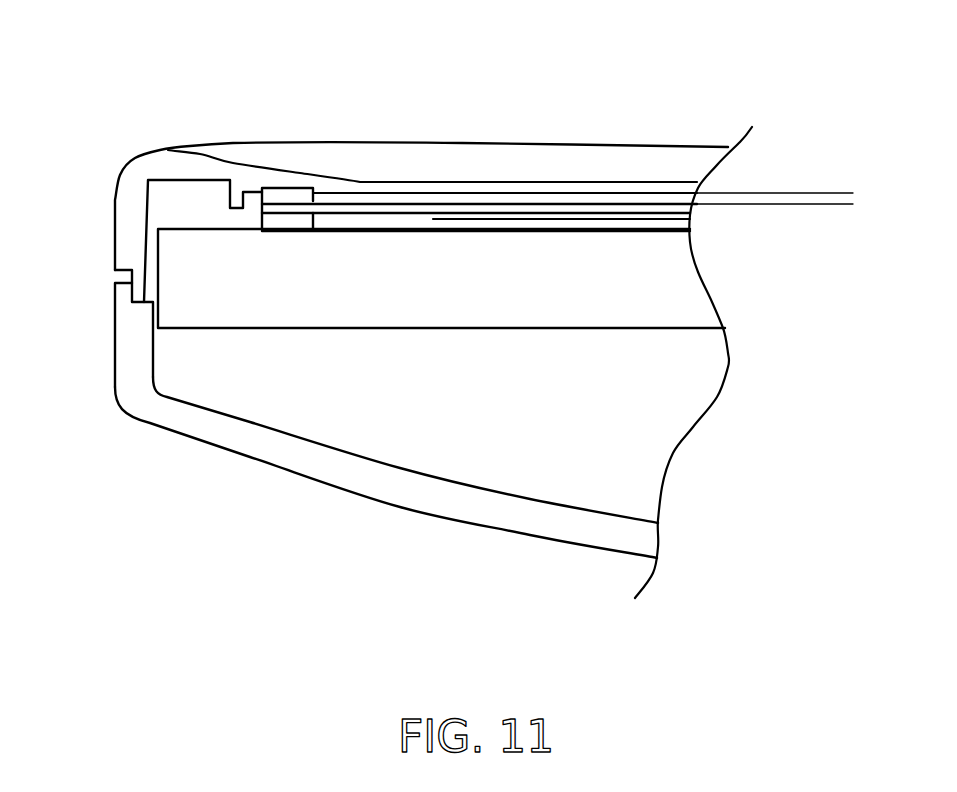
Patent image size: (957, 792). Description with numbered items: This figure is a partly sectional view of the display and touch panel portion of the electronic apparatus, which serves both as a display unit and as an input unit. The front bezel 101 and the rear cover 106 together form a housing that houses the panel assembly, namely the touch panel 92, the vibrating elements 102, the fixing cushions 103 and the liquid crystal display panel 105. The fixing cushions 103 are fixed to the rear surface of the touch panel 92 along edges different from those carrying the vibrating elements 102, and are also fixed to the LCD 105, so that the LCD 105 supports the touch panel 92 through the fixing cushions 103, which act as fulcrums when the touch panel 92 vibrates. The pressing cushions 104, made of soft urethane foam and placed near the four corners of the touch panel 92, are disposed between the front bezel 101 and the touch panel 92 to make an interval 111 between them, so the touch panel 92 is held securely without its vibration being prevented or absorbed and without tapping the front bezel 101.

The front bezel 101 is at (462, 143).
The vibrating element 102 is at (685, 212).
The touch panel 92 is at (690, 222).
The fixing cushion 103 is at (262, 219).
The pressing cushion 104 is at (288, 187).
The liquid crystal display panel 105 is at (678, 298).
The rear cover 106 is at (638, 540).
The interval 111 is at (840, 150).